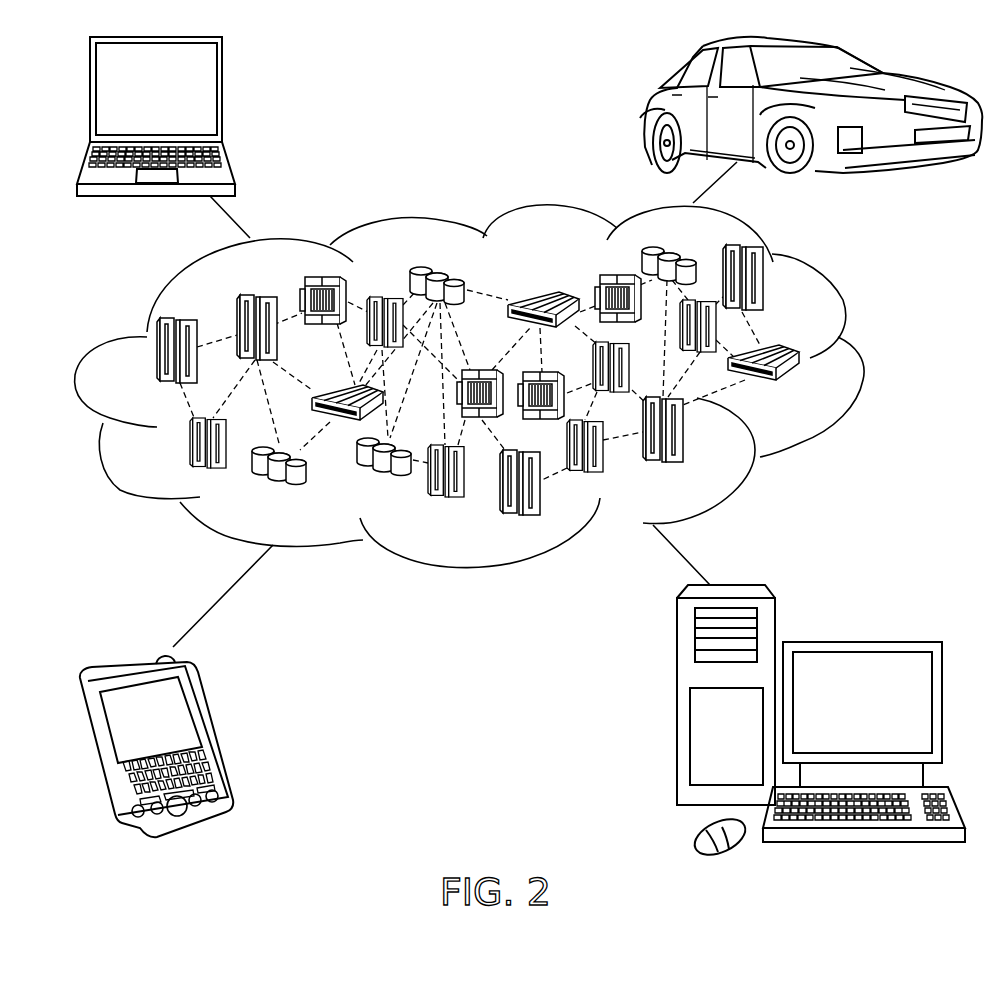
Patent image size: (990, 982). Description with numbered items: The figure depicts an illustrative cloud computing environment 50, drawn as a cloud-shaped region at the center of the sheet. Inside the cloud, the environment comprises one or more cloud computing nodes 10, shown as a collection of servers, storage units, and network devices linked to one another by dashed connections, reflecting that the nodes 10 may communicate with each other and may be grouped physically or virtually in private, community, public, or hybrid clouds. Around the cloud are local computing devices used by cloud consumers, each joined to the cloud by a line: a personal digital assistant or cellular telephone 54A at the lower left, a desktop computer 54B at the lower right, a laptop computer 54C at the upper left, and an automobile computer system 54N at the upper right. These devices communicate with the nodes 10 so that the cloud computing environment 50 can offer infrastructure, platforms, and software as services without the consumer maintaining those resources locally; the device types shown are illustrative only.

The cloud computing nodes 10 is at (805, 390).
The cloud computing environment 50 is at (860, 357).
The personal digital assistant (PDA) or cellular telephone 54A is at (213, 732).
The desktop computer 54B is at (860, 640).
The laptop computer 54C is at (222, 97).
The automobile computer system 54N is at (645, 110).